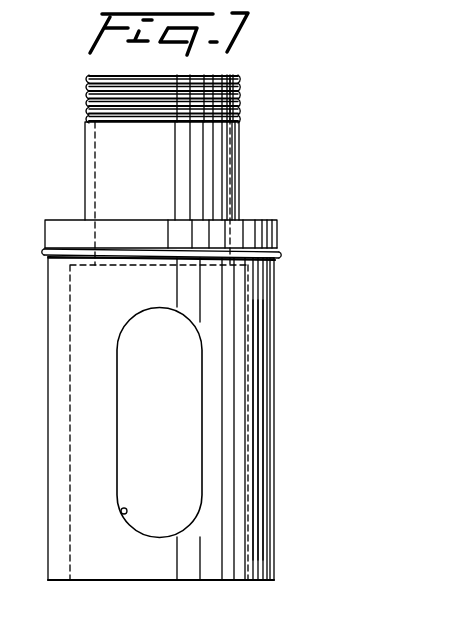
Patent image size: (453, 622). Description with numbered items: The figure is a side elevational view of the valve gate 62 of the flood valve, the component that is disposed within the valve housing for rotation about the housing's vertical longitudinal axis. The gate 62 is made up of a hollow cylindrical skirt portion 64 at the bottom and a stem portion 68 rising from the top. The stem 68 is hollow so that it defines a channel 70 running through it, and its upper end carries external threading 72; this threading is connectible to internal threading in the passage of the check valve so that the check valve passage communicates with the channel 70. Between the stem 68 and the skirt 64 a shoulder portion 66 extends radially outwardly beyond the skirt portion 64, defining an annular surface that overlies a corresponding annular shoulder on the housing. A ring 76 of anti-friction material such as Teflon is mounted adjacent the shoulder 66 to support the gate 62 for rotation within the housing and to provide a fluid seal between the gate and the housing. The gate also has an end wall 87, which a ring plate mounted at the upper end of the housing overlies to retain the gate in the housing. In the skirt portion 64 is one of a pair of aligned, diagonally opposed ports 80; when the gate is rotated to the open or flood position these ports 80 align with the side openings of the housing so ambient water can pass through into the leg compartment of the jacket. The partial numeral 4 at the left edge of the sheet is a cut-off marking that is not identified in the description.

The external threading 72 is at (238, 88).
The stem portion 68 is at (237, 165).
The channel 70 is at (90, 161).
The end wall 87 is at (257, 225).
The shoulder portion 66 is at (270, 248).
The ring 76 is at (278, 258).
The valve gate 62 is at (272, 373).
The skirt portion 64 is at (263, 483).
The port 80 is at (124, 514).
The reference numeral 4 is at (5, 297).